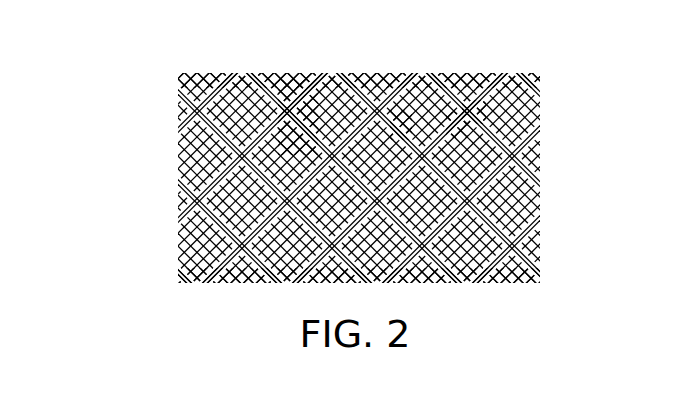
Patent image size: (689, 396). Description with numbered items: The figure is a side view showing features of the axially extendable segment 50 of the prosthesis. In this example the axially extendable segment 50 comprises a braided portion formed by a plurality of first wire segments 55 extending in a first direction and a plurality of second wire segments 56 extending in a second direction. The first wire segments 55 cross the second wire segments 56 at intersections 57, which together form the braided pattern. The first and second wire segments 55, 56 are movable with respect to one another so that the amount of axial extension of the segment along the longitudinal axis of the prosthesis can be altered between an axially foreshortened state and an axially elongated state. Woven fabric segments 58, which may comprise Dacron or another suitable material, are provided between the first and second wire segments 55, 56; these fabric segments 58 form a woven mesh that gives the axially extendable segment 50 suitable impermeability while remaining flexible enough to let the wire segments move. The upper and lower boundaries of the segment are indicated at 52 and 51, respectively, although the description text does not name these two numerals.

The axially extendable segment 50 is at (127, 103).
The first surface 51 is at (541, 262).
The second surface 52 is at (541, 80).
The first wire segments 55 is at (400, 127).
The second wire segments 56 is at (455, 125).
The intersections 57 is at (475, 110).
The woven fabric segments 58 is at (292, 147).